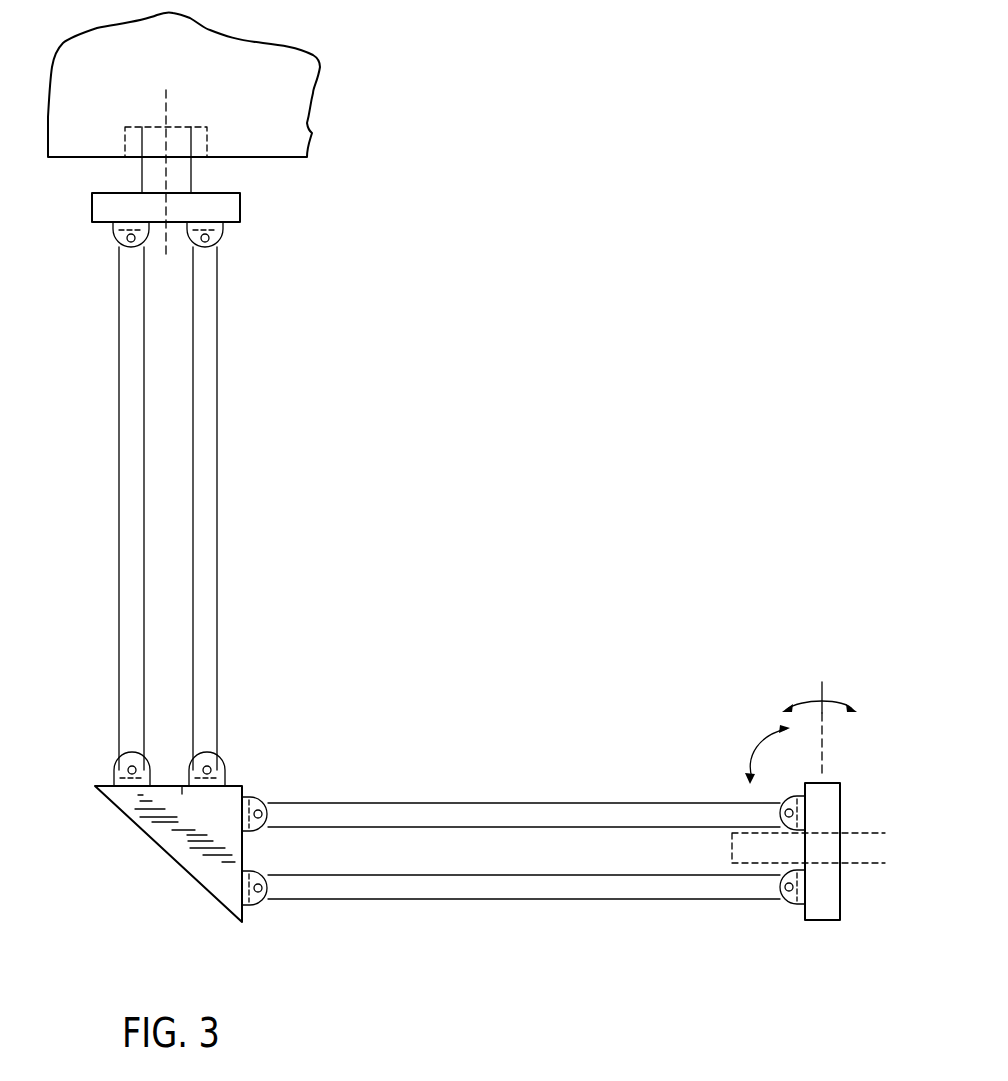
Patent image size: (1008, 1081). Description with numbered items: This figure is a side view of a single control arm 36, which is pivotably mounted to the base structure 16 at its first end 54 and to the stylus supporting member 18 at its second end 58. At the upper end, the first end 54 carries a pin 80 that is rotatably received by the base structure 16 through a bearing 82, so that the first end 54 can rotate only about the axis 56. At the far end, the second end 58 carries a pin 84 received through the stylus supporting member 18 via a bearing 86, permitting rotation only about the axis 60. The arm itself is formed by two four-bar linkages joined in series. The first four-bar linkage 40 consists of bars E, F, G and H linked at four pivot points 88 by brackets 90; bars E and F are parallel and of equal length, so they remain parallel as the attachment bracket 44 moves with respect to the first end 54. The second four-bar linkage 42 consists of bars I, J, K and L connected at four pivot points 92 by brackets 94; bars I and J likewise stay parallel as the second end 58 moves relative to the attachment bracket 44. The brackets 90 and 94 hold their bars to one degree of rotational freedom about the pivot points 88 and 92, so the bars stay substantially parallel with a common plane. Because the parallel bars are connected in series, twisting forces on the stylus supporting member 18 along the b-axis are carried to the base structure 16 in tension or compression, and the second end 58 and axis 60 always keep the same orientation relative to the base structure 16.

The base structure 16 is at (303, 133).
The stylus supporting member 18 is at (880, 832).
The control arm 36 is at (147, 824).
The first four-bar linkage 40 is at (165, 508).
The second four-bar linkage 42 is at (524, 872).
The attachment bracket 44 is at (155, 820).
The first end 54 is at (174, 192).
The axis 56 is at (165, 250).
The second end 58 is at (822, 945).
The axis 60 is at (809, 719).
The pin 80 is at (177, 140).
The bearing 82 is at (125, 138).
The pin 84 is at (832, 822).
The bearing 86 is at (852, 840).
The pivot points 88 is at (118, 237).
The brackets 90 is at (102, 230).
The pivot points 92 is at (260, 827).
The brackets 94 is at (250, 795).